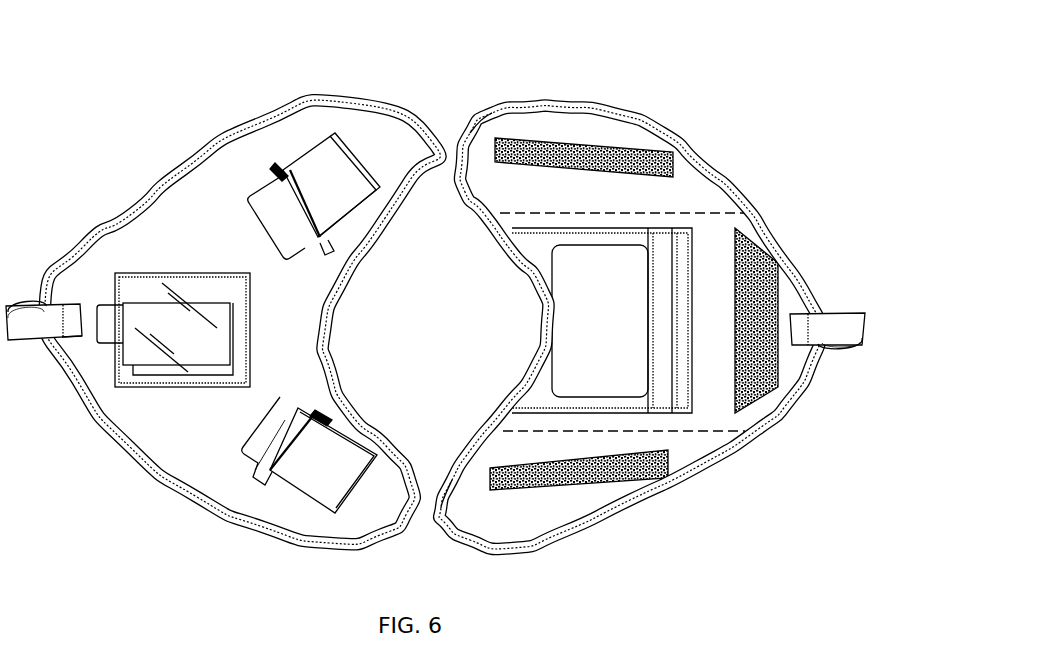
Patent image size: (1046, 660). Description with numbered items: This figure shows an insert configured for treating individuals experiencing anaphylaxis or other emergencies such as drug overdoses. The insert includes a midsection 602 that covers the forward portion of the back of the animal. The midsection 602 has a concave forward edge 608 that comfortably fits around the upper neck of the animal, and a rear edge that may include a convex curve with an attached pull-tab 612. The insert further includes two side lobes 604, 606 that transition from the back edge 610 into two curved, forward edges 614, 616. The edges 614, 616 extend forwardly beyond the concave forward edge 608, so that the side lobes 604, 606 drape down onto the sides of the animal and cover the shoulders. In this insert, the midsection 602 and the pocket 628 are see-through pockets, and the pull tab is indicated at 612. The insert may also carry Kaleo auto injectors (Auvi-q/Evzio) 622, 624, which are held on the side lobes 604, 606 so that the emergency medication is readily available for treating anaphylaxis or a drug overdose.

The midsection 602 is at (591, 307).
The side lobe 604 is at (699, 187).
The side lobe 606 is at (696, 436).
The concave forward edge 608 is at (528, 314).
The back edge 610 is at (807, 279).
The pull-tab 612 is at (855, 332).
The curved forward edge 614 is at (491, 114).
The curved forward edge 616 is at (444, 512).
The auto injector 622 is at (327, 169).
The auto injector 624 is at (321, 477).
The see-through pocket 628 is at (139, 294).